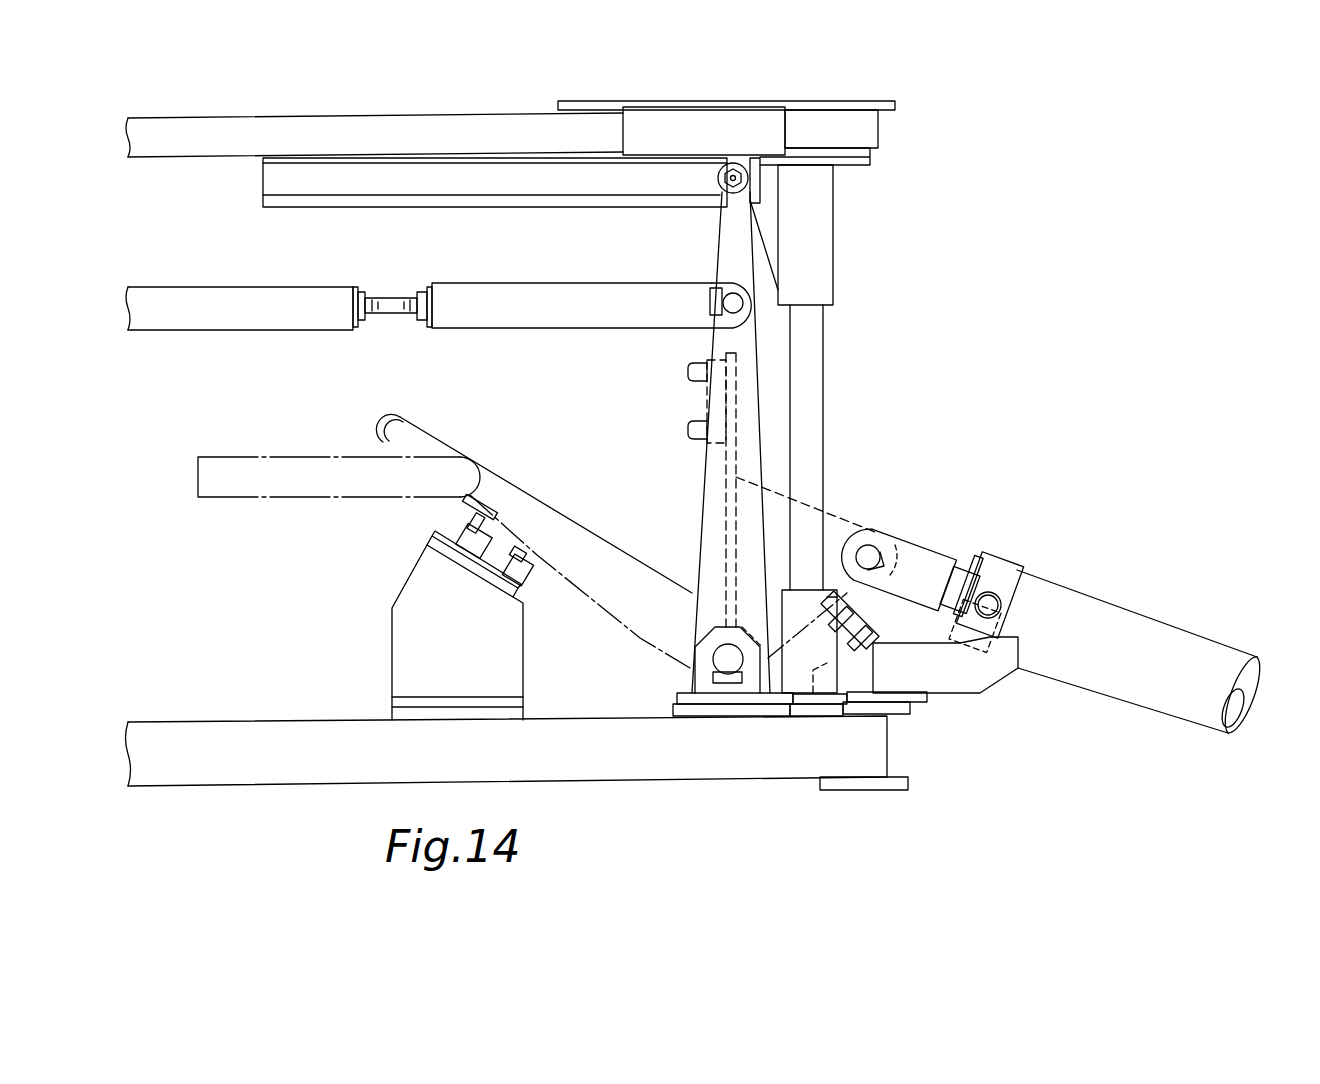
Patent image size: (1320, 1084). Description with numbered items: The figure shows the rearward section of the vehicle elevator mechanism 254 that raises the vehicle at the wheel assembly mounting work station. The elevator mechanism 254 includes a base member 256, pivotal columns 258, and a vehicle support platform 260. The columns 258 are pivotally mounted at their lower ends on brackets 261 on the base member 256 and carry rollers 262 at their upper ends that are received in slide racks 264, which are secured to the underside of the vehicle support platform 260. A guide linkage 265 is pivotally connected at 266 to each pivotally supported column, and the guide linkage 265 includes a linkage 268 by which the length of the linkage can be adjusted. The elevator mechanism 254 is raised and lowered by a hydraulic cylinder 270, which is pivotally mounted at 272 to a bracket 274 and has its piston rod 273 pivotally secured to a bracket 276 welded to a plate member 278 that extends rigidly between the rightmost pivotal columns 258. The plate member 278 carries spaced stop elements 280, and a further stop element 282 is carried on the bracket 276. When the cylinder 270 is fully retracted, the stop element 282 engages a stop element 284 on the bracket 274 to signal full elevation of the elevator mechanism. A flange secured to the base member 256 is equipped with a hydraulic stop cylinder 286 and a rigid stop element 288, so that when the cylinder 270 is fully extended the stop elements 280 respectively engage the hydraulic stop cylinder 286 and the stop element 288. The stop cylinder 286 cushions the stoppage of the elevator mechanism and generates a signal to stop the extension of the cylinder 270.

The elevator mechanism 254 is at (440, 95).
The base member 256 is at (265, 722).
The pivotal columns 258 is at (757, 385).
The vehicle support platform 260 is at (290, 118).
The brackets 261 is at (705, 665).
The rollers 262 is at (718, 178).
The slide racks 264 is at (420, 208).
The guide linkage 265 is at (218, 272).
The pivotal connection 266 is at (745, 305).
The linkage 268 is at (390, 296).
The hydraulic cylinder 270 is at (1113, 618).
The pivotal mounting 272 is at (992, 600).
The piston rod 273 is at (960, 566).
The bracket 274 is at (975, 693).
The bracket 276 is at (842, 526).
The plate member 278 is at (726, 530).
The stop elements 280 is at (690, 430).
The stop element 282 is at (852, 604).
The stop element 284 is at (878, 630).
The hydraulic stop cylinder 286 is at (446, 528).
The rigid stop element 288 is at (520, 583).